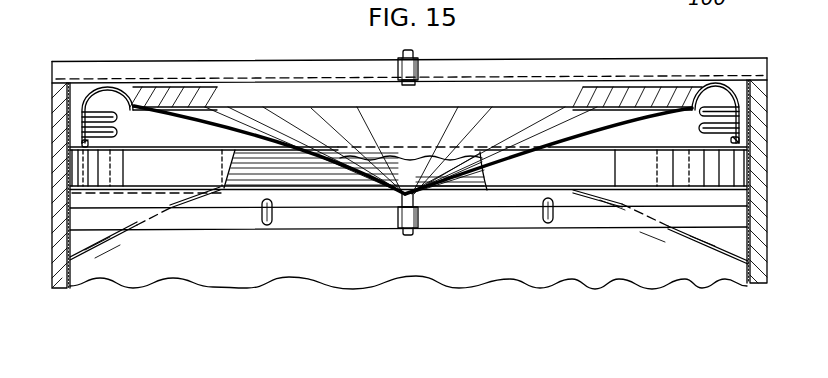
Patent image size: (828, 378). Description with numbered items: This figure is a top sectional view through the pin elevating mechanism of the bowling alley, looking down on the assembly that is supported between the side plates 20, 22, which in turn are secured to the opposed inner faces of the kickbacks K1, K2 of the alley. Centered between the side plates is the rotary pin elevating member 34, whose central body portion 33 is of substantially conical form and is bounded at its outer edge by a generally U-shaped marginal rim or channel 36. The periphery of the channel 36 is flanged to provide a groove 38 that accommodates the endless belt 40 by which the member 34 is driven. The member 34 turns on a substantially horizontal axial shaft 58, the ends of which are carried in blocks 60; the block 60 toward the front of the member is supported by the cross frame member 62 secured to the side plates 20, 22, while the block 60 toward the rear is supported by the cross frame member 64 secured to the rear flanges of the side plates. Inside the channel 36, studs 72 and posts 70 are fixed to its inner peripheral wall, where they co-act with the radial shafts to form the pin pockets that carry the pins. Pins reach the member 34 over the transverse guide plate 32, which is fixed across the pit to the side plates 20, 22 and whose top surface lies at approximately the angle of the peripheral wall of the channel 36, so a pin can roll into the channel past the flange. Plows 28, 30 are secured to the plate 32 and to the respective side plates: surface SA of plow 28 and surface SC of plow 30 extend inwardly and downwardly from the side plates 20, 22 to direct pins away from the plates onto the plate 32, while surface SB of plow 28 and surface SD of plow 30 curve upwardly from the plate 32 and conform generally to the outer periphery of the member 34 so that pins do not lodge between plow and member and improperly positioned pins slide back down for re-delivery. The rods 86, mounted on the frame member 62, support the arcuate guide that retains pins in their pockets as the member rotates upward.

The side plate 20 is at (70, 285).
The side plate 22 is at (752, 269).
The plow 28 is at (77, 245).
The plow 30 is at (723, 243).
The transverse guide plate 32 is at (250, 184).
The body portion 33 is at (301, 117).
The pin elevating member 34 is at (368, 196).
The marginal rim or channel 36 is at (90, 90).
The groove 38 is at (80, 147).
The endless belt 40 is at (82, 142).
The axial shaft 58 is at (402, 53).
The block 60 is at (416, 72).
The cross frame member 62 is at (484, 220).
The cross frame member 64 is at (506, 68).
The post 70 is at (117, 133).
The stud 72 is at (117, 117).
The rod 86 is at (272, 220).
The surface of plow 28 SA is at (93, 201).
The surface of plow 28 SB is at (213, 170).
The surface of plow 30 SC is at (707, 196).
The surface of plow 30 SD is at (565, 168).
The kickback K1 is at (55, 287).
The kickback K2 is at (762, 277).